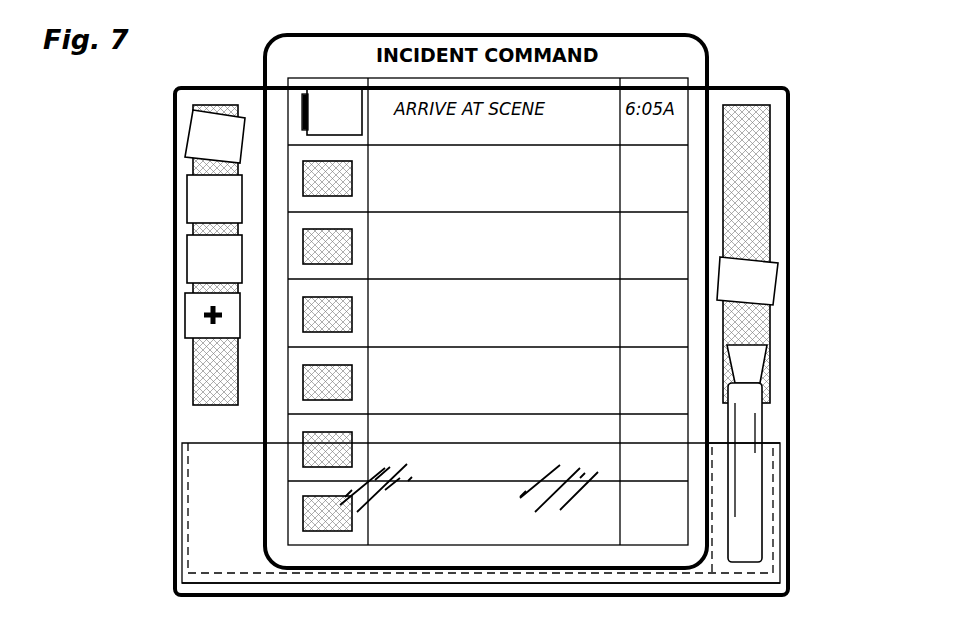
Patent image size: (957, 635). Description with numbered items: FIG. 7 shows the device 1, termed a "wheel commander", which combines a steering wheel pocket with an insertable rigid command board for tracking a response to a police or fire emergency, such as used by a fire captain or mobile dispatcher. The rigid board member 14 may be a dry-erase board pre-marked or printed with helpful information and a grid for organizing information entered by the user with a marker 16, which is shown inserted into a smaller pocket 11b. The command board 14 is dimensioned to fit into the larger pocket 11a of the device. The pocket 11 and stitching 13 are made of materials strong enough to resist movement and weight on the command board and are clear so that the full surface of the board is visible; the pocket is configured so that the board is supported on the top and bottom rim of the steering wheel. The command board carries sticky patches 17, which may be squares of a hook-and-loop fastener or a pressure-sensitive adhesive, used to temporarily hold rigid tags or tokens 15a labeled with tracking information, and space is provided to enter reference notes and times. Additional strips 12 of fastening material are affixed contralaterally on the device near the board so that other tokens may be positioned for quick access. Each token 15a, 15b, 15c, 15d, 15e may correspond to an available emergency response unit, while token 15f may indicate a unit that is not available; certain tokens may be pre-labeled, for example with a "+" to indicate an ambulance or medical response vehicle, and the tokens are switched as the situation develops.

The device 1 is at (808, 128).
The pocket 11 is at (217, 543).
The larger pocket 11a is at (222, 440).
The smaller pocket 11b is at (757, 440).
The strips 12 is at (217, 100).
The stitching 13 is at (184, 496).
The rigid board member 14 is at (713, 62).
The token 15a is at (340, 87).
The token 15b is at (198, 142).
The token 15c is at (198, 203).
The token 15d is at (198, 262).
The token 15e is at (200, 314).
The token 15f is at (764, 279).
The marker 16 is at (752, 492).
The sticky patches 17 is at (297, 103).